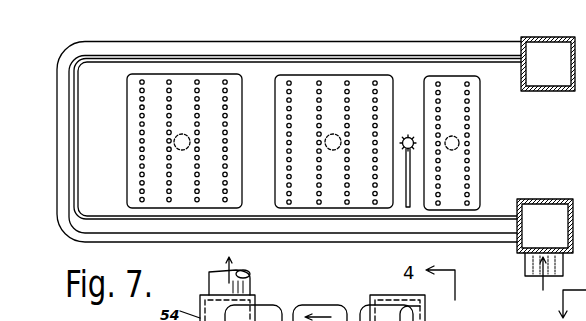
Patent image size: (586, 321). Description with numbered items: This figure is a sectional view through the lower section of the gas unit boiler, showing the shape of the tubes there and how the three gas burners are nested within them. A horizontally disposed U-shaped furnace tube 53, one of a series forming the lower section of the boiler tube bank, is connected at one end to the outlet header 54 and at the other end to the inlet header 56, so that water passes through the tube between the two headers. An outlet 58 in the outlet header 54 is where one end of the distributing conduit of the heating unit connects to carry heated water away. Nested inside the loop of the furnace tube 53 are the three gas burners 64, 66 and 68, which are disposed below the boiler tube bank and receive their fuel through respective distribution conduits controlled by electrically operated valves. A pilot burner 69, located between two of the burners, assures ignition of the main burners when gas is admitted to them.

The U-shaped furnace tube 53 is at (288, 41).
The outlet header 54 is at (555, 37).
The inlet header 56 is at (518, 251).
The outlet 58 is at (252, 284).
The gas burner 64 is at (480, 152).
The gas burner 66 is at (275, 153).
The gas burner 68 is at (127, 152).
The pilot burner 69 is at (408, 135).